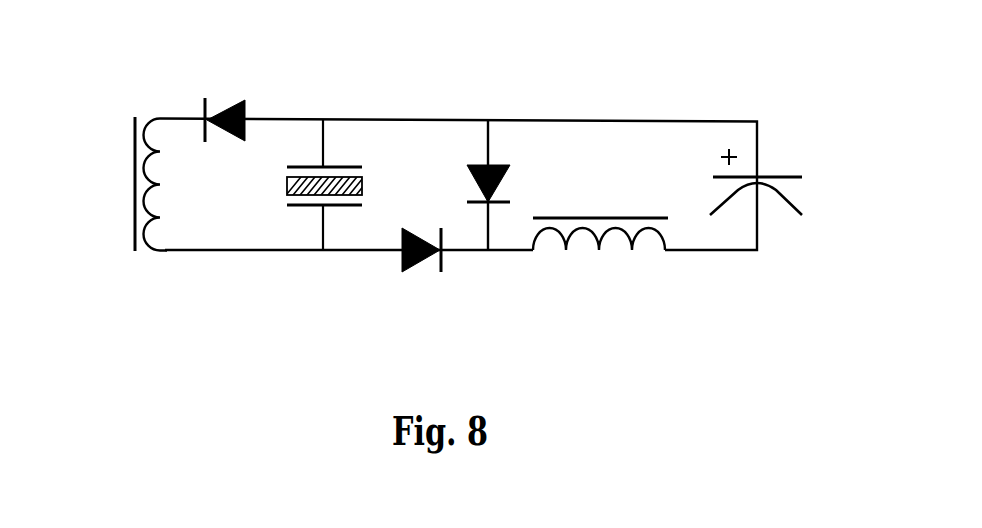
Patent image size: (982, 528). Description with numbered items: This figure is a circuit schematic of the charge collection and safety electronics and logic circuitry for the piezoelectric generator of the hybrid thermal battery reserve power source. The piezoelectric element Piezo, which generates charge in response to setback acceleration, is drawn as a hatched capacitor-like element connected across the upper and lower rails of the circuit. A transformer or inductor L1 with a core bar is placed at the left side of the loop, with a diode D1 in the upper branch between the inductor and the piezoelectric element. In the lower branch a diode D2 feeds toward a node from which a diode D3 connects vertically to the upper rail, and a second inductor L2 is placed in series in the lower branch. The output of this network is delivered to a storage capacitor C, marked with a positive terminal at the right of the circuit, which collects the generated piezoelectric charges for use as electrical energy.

The transformer / primary inductor L1 is at (109, 184).
The diode D1 is at (234, 80).
The piezoelectric element Piezo is at (294, 211).
The diode D2 is at (424, 284).
The diode D3 is at (491, 133).
The inductor L2 is at (600, 279).
The capacitor C is at (790, 183).